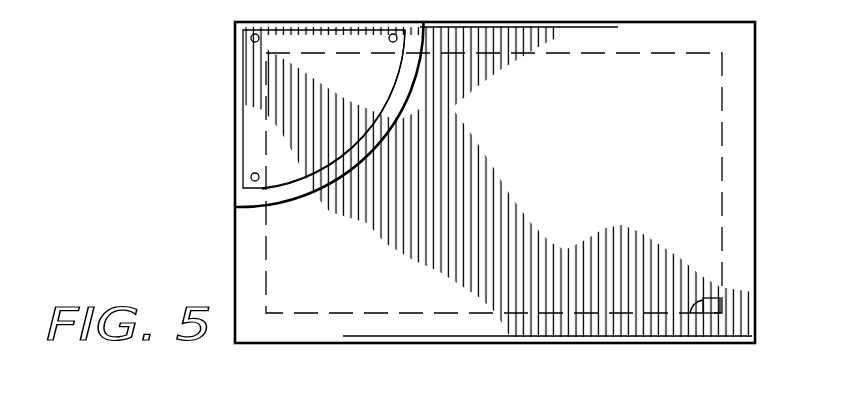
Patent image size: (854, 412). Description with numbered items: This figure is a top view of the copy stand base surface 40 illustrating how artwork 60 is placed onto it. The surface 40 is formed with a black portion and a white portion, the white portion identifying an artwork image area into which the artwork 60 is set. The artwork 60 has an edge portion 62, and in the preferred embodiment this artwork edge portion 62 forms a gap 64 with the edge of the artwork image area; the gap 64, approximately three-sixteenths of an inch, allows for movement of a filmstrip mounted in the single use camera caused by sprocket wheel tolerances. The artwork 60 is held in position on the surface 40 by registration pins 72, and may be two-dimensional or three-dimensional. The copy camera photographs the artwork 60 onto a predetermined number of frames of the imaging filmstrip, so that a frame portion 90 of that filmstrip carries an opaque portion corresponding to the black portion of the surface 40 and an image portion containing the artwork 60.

The surface 40 is at (740, 184).
The artwork 60 is at (288, 122).
The edge portion 62 is at (382, 92).
The gap 64 is at (352, 146).
The registration pins 72 is at (252, 35).
The frame portion 90 is at (723, 302).